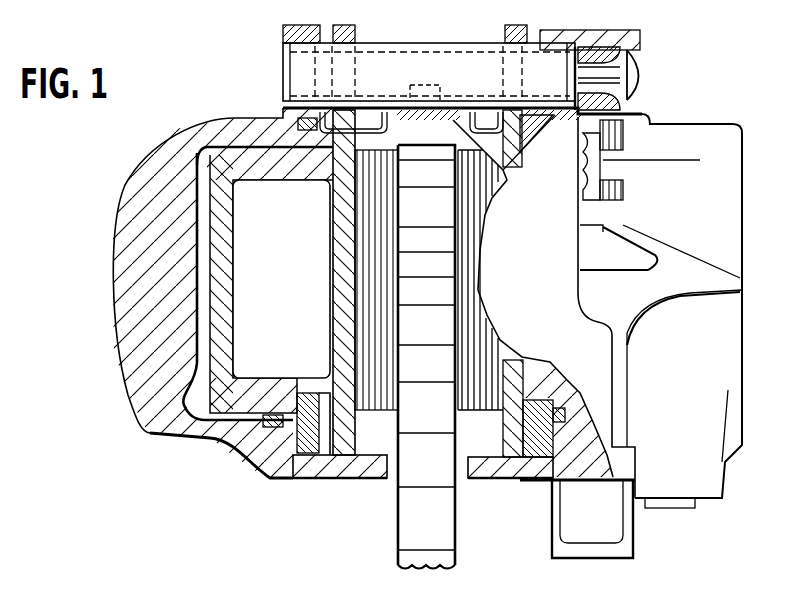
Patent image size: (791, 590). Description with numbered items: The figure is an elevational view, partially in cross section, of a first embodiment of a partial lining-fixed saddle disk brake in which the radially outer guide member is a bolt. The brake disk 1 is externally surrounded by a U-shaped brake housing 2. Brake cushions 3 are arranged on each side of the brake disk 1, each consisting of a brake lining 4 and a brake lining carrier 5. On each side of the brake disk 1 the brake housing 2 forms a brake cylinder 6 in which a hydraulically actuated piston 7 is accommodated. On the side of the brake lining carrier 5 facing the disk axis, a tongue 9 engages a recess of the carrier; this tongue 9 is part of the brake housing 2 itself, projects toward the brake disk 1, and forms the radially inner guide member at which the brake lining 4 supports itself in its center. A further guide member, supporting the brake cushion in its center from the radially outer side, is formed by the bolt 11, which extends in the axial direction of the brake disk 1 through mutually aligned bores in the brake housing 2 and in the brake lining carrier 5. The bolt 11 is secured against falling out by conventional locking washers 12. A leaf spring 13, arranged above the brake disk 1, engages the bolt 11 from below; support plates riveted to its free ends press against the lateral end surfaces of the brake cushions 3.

The brake disk 1 is at (410, 517).
The brake housing 2 is at (130, 390).
The brake cushions 3 is at (356, 392).
The brake lining 4 is at (375, 222).
The brake lining carrier 5 is at (343, 306).
The brake cylinder 6 is at (205, 232).
The piston 7 is at (227, 283).
The tongue 9 is at (372, 470).
The bolt 11 is at (462, 68).
The locking washers 12 is at (638, 60).
The leaf spring 13 is at (505, 170).